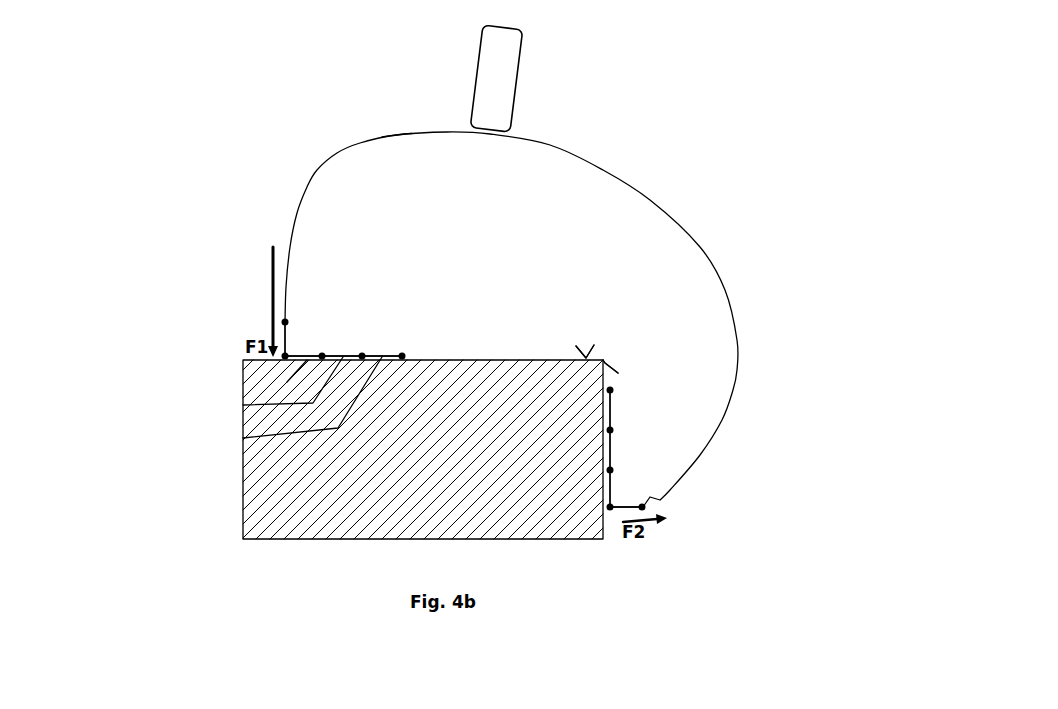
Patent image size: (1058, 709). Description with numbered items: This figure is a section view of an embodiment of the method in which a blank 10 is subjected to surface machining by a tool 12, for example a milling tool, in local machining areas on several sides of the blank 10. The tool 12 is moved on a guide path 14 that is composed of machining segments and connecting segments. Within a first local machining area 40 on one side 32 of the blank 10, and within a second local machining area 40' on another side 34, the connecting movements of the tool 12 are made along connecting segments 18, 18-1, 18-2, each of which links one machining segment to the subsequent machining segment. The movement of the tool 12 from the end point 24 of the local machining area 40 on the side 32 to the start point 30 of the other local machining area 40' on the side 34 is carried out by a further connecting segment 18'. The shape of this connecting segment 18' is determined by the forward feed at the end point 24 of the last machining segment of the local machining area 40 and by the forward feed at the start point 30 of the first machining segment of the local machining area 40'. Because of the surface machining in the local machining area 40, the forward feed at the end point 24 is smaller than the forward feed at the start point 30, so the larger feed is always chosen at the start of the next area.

The blank 10 is at (277, 498).
The tool 12 is at (508, 62).
The guide path 14 is at (306, 161).
The connecting segment 18 is at (464, 386).
The connecting segment 18' is at (374, 79).
The second connecting segment 18-1 is at (313, 405).
The third connecting segment 18-2 is at (338, 428).
The end point 24 is at (285, 322).
The start point 30 is at (285, 322).
The side 32 is at (605, 363).
The side 34 is at (586, 358).
The local machining area 40 is at (737, 318).
The local machining area 40' is at (699, 267).